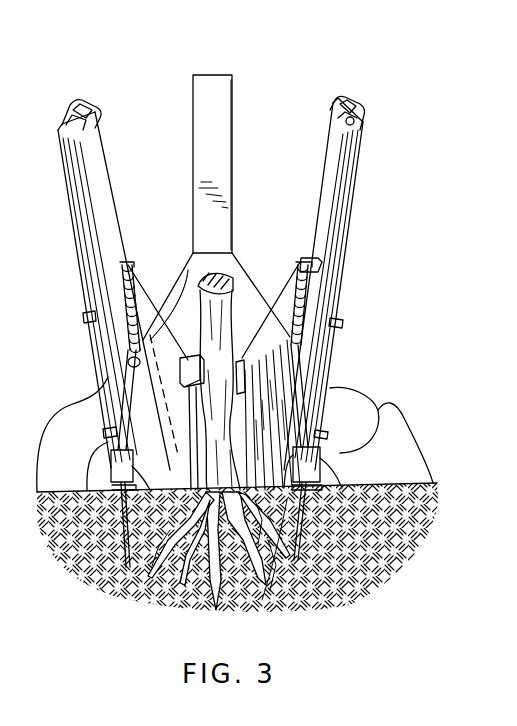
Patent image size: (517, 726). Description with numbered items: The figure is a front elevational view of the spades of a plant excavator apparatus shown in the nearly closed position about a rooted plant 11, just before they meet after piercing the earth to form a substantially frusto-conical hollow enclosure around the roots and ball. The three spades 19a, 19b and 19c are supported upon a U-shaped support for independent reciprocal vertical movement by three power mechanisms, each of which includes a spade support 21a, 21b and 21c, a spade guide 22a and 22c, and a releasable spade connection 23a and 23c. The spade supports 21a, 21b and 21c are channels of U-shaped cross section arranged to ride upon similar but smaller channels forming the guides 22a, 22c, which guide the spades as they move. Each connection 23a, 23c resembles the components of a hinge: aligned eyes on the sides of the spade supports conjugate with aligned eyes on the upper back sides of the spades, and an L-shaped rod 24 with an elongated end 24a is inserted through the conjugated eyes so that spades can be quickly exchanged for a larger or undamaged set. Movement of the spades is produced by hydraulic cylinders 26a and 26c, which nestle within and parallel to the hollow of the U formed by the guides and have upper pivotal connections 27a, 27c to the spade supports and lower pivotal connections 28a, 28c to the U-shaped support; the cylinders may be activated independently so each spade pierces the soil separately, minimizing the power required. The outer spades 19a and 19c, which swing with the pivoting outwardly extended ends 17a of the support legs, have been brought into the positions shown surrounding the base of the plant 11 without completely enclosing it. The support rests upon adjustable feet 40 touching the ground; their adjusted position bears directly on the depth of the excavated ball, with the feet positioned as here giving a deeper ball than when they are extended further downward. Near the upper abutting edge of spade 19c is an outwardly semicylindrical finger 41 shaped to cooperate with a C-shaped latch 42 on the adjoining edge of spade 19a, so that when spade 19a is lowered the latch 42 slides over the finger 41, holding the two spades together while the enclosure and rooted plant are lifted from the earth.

The rooted plant 11 is at (190, 270).
The outwardly extended ends of legs 17a is at (106, 493).
The spade 19a is at (185, 448).
The spade 19b is at (175, 305).
The spade 19c is at (272, 415).
The spade support 21a is at (88, 127).
The spade support 21b is at (212, 82).
The spade support 21c is at (327, 110).
The spade guide 22a is at (147, 553).
The spade guide 22c is at (288, 567).
The releasable spade connection 23a is at (125, 268).
The releasable spade connection 23c is at (291, 270).
The L-shaped rod 24 is at (310, 264).
The elongated end of rod 24a is at (137, 373).
The hydraulic cylinder 26a is at (103, 343).
The hydraulic cylinder 26c is at (327, 353).
The upper pivotal connection 27a is at (54, 136).
The upper pivotal connection 27c is at (362, 127).
The lower pivotal connection 28a is at (112, 486).
The lower pivotal connection 28c is at (377, 418).
The adjustable feet 40 is at (155, 588).
The semicylindrical finger 41 is at (246, 372).
The C-shaped latch 42 is at (137, 362).